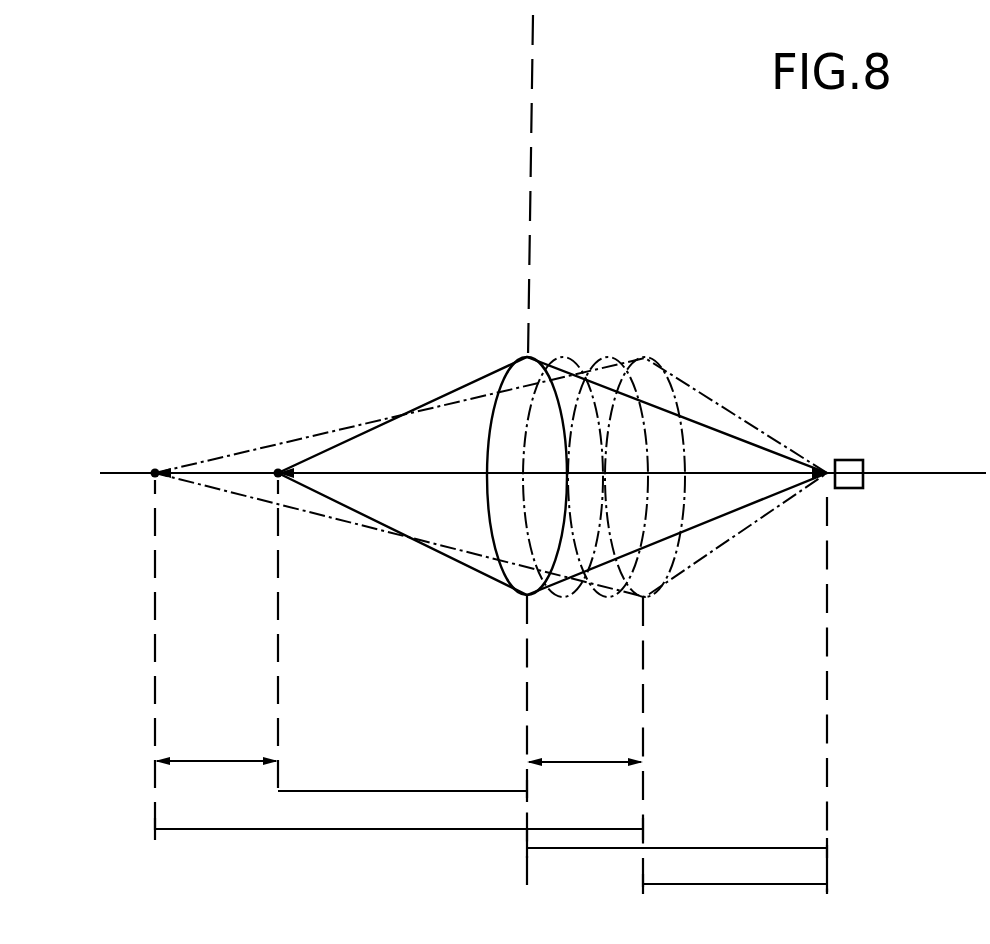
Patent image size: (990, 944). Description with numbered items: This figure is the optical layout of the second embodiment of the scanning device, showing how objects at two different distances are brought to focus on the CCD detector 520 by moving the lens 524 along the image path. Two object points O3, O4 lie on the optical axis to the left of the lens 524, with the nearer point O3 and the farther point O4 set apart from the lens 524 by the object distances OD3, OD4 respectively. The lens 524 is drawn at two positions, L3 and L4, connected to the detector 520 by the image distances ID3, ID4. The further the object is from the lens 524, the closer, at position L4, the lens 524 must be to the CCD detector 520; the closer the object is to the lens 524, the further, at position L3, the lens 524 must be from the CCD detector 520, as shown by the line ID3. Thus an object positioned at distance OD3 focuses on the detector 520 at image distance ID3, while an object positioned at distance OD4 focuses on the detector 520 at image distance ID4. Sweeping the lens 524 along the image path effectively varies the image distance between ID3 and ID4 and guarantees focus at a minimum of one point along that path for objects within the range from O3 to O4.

The CCD detector 520 is at (850, 460).
The lens 524 is at (529, 357).
The object point O3 is at (273, 469).
The object point O4 is at (154, 469).
The lens position L3 is at (509, 743).
The lens position L4 is at (659, 744).
The object distance OD3 is at (402, 779).
The object distance OD4 is at (399, 817).
The image distance ID3 is at (677, 836).
The image distance ID4 is at (735, 873).